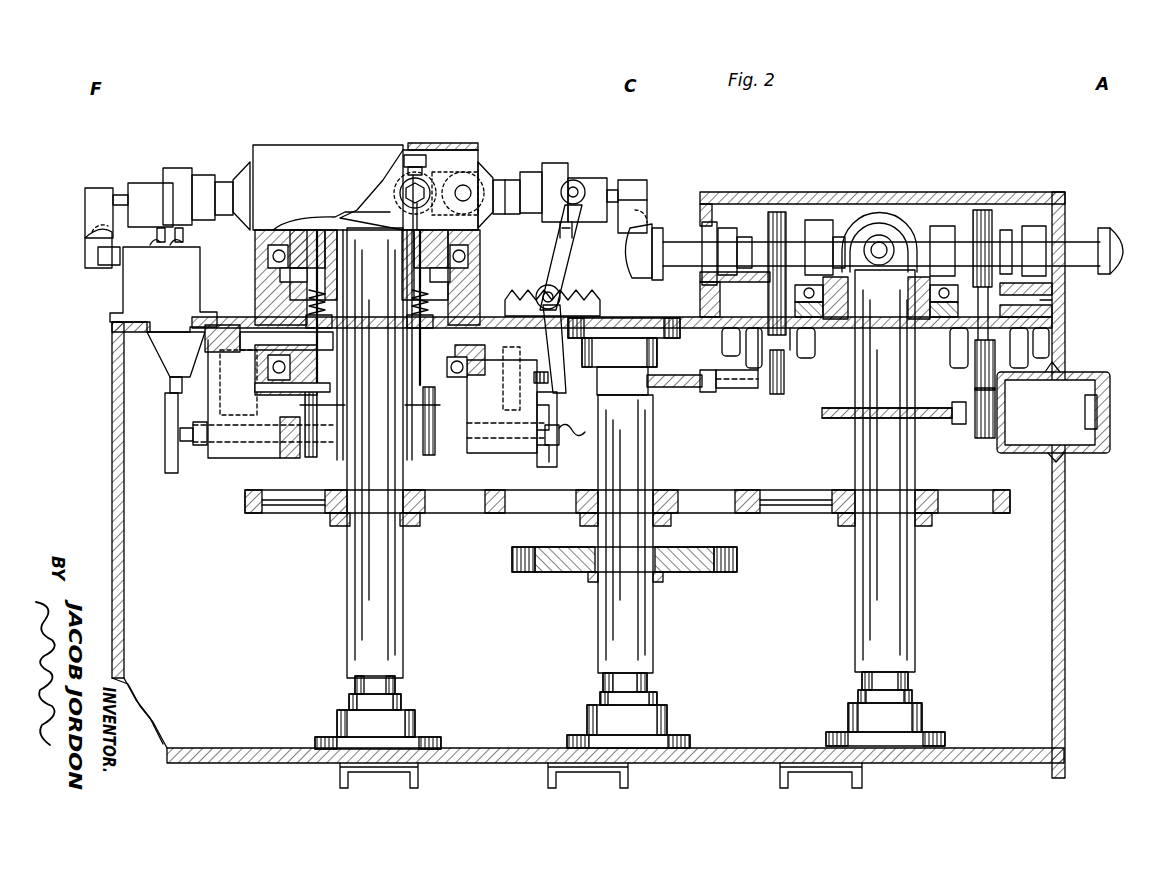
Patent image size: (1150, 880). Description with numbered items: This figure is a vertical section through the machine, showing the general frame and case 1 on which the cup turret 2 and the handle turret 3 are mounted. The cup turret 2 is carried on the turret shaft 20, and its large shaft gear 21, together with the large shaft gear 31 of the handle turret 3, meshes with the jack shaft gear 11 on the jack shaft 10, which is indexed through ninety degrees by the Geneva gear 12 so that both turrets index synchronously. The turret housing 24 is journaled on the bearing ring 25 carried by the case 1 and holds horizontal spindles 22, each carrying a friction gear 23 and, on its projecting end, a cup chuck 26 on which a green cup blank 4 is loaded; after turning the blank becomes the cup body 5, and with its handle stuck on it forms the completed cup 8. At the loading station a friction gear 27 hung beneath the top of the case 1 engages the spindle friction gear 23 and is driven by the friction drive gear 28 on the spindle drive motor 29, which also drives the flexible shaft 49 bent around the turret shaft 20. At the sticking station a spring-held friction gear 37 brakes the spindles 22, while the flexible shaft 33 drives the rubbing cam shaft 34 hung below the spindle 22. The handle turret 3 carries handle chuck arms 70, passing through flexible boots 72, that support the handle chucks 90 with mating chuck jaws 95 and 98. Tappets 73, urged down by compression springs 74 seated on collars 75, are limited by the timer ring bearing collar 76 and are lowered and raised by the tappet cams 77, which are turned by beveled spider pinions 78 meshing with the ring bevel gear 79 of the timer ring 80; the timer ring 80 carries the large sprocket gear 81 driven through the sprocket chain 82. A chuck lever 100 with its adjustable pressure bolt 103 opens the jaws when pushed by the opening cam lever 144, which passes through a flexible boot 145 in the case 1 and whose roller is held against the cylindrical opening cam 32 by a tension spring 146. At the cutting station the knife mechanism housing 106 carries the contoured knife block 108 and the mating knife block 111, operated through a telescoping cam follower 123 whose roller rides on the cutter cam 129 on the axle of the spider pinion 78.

The general frame and case 1 is at (1093, 558).
The cup turret 2 is at (893, 196).
The handle turret 3 is at (403, 628).
The cup blank 4 is at (1120, 271).
The cup body 5 is at (643, 274).
The completed cup 8 is at (763, 397).
The jack shaft 10 is at (653, 631).
The jack shaft gear 11 is at (428, 148).
The Geneva gear 12 is at (551, 573).
The turret shaft 20 is at (915, 620).
The large shaft gear 21 is at (772, 513).
The spindle 22 is at (683, 262).
The friction gear 23 is at (781, 208).
The turret housing 24 is at (833, 196).
The bearing ring 25 is at (1062, 300).
The cup chuck 26 is at (662, 233).
The friction gear 27 is at (975, 361).
The friction drive gear 28 is at (975, 433).
The cup turret spindle drive motor 29 is at (1068, 456).
The large shaft gear 31 is at (486, 514).
The cylindrical opening cam 32 is at (562, 467).
The flexible shaft 33 is at (671, 388).
The rubbing cam shaft 34 is at (713, 397).
The friction gear 37 is at (828, 408).
The flexible shaft 49 is at (833, 422).
The handle chuck arm 70 is at (222, 178).
The flexible boot 72 is at (243, 163).
The tappet 73 is at (405, 155).
The compression spring 74 is at (418, 295).
The collar 75 is at (420, 318).
The timer ring bearing collar 76 is at (398, 353).
The tappet cam 77 is at (312, 459).
The beveled spider pinion 78 is at (272, 463).
The ring bevel gear 79 is at (403, 407).
The timer ring 80 is at (253, 382).
The large sprocket gear 81 is at (252, 322).
The sprocket chain 82 is at (583, 348).
The handle chuck 90 is at (185, 180).
The chuck jaw 95 is at (98, 192).
The chuck jaw 98 is at (627, 187).
The chuck lever 100 is at (162, 241).
The adjustable pressure bolt 103 is at (567, 232).
The cutting knife mechanism housing 106 is at (137, 292).
The contoured knife block 108 is at (103, 268).
The knife block 111 is at (80, 250).
The telescoping cam follower 123 is at (168, 380).
The cutter cam 129 is at (166, 470).
The opening cam lever 144 is at (548, 263).
The flexible boot 145 is at (534, 294).
The tension spring 146 is at (549, 377).